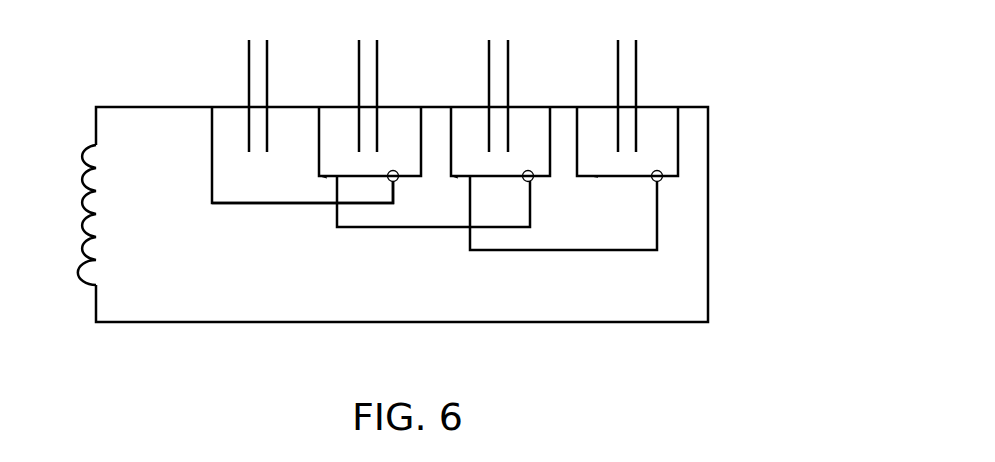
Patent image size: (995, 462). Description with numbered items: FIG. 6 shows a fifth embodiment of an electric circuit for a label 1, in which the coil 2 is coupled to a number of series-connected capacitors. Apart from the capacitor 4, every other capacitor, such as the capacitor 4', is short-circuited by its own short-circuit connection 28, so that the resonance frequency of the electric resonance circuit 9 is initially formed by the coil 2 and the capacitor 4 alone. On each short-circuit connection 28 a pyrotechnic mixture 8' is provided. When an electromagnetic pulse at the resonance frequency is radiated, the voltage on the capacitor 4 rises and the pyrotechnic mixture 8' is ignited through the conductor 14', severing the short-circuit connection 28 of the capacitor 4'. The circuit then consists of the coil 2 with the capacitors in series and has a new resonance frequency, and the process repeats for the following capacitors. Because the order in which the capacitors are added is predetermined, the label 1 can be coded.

The label 1 is at (789, 353).
The coil 2 is at (83, 217).
The capacitor 4 is at (229, 94).
The capacitor 4' is at (336, 94).
The pyrotechnic mixture 8' is at (401, 117).
The electric resonance circuit 9 is at (150, 160).
The conductor 14' is at (291, 248).
The short-circuit connection 28 is at (327, 178).